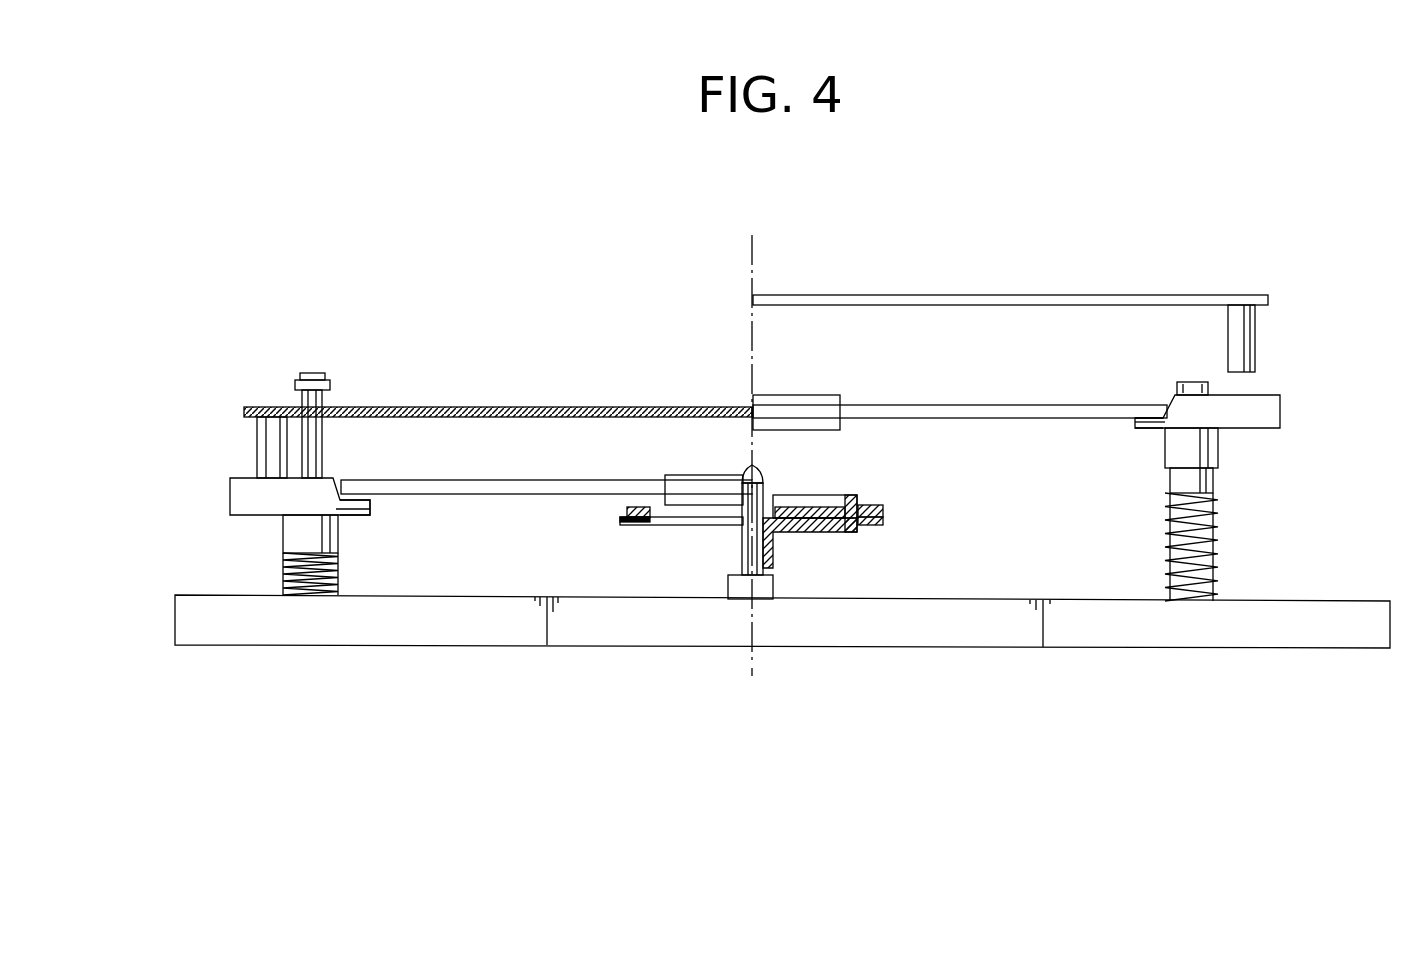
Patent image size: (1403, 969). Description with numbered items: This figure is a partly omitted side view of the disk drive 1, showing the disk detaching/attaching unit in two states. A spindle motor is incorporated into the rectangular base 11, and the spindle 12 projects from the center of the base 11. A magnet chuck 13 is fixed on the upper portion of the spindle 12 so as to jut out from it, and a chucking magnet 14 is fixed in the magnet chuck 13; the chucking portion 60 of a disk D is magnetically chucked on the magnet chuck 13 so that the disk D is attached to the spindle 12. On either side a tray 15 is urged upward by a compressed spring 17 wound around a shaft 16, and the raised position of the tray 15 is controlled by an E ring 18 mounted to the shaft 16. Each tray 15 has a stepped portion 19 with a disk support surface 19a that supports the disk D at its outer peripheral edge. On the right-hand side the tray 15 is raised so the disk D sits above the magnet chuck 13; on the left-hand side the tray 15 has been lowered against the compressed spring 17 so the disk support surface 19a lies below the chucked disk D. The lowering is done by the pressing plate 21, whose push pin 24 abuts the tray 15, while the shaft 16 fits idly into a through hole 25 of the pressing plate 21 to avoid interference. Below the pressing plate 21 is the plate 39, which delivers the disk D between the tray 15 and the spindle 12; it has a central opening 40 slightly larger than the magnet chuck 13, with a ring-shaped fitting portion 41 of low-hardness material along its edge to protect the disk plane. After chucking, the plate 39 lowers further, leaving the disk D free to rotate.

The disk drive 1 is at (674, 222).
The base 11 is at (420, 635).
The spindle 12 is at (742, 548).
The magnet chuck 13 is at (835, 532).
The chucking magnet 14 is at (800, 496).
The tray 15 is at (230, 497).
The shaft 16 is at (316, 442).
The compressed spring 17 is at (285, 583).
The E ring 18 is at (297, 382).
The stepped portion 19 is at (362, 517).
The disk support surface 19a is at (360, 492).
The pressing plate 21 is at (508, 407).
The push pin 24 is at (257, 448).
The through hole 25 is at (330, 407).
The plate 39 is at (620, 520).
The opening 40 is at (703, 525).
The fitting portion 41 is at (627, 512).
The chucking portion 60 is at (680, 475).
The disk D is at (528, 480).